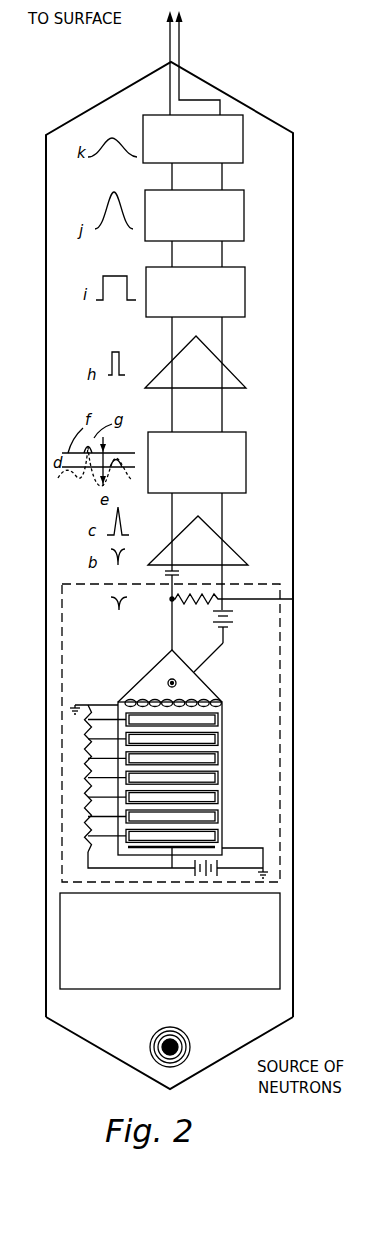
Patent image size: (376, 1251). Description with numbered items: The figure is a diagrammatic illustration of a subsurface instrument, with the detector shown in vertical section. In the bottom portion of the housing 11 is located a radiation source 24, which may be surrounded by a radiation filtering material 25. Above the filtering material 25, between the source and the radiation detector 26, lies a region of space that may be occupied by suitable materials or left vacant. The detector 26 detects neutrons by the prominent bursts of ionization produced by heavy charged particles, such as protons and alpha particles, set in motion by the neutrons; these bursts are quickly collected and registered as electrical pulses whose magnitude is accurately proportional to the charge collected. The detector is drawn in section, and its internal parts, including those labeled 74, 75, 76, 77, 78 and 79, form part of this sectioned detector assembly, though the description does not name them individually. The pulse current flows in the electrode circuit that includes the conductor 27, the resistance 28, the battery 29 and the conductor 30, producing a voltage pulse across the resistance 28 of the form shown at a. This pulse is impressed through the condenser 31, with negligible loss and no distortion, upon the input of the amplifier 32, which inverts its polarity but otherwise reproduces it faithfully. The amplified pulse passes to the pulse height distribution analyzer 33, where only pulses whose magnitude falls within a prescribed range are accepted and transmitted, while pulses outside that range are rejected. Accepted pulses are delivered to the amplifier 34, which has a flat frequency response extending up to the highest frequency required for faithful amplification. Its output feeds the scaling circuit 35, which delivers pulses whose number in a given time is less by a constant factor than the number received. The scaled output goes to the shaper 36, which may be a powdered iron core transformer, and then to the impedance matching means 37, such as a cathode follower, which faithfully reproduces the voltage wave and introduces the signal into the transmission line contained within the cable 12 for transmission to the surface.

The housing 11 is at (296, 797).
The cable 12 is at (172, 45).
The radiation source 24 is at (190, 1045).
The radiation filtering material 25 is at (233, 1018).
The radiation detector 26 is at (279, 673).
The conductor 27 is at (168, 683).
The resistance 28 is at (207, 603).
The battery 29 is at (233, 632).
The conductor 30 is at (209, 660).
The condenser 31 is at (167, 576).
The amplifier 32 is at (240, 557).
The pulse height distribution analyzer 33 is at (246, 474).
The amplifier 34 is at (246, 383).
The scaling circuit 35 is at (245, 305).
The shaper 36 is at (244, 226).
The impedance matching means 37 is at (243, 156).
The photomultiplier tube 74 is at (222, 736).
The anode 75 is at (130, 848).
The dynodes 76 is at (221, 760).
The photocathode 77 is at (224, 701).
The battery 78 is at (222, 866).
The voltage divider resistor 79 is at (88, 806).